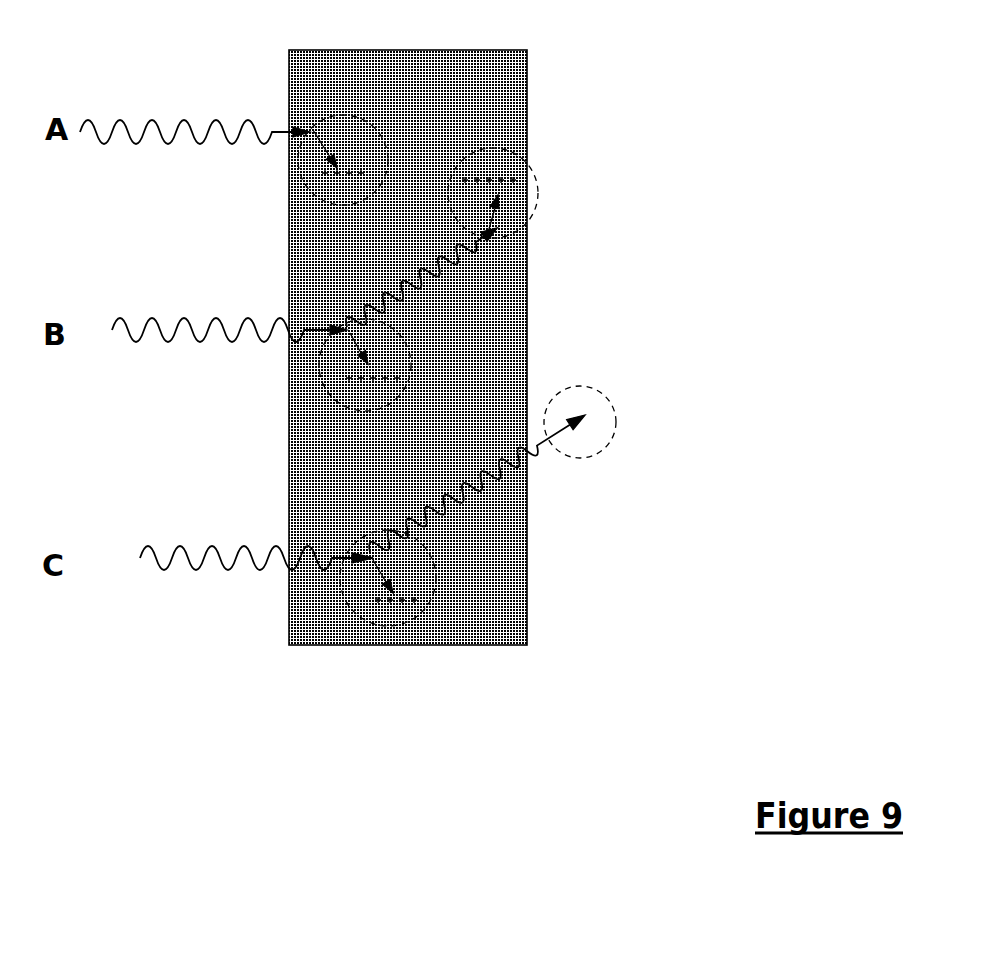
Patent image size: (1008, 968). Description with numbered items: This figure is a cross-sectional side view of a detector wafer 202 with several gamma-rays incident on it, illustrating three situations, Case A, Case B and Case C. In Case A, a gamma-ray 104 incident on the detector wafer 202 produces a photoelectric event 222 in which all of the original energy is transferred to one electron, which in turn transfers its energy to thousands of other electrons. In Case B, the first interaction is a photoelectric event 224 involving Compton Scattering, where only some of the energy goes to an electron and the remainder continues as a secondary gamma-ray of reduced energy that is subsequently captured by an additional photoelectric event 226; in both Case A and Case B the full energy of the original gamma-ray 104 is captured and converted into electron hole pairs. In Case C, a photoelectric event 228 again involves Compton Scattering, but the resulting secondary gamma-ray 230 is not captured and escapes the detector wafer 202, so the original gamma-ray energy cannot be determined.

The gamma-ray 104 is at (226, 298).
The detector wafer 202 is at (458, 336).
The photoelectric event 222 is at (385, 144).
The photoelectric event 224 is at (418, 365).
The additional photoelectric event 226 is at (494, 241).
The photoelectric event 228 is at (440, 577).
The secondary gamma-ray 230 is at (543, 466).